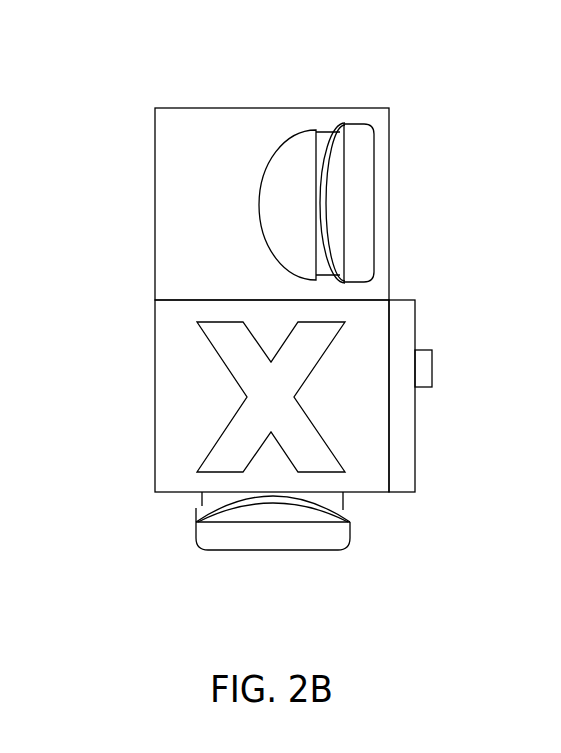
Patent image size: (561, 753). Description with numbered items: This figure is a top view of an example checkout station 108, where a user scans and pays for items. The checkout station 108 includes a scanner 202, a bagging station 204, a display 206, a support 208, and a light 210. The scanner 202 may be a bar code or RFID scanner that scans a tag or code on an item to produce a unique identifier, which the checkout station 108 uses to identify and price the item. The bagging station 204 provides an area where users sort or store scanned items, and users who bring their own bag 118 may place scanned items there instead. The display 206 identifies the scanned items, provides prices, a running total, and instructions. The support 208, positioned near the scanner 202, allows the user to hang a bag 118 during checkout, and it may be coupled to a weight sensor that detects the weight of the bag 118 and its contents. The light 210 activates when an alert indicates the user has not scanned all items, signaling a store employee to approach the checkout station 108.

The checkout station 108 is at (233, 74).
The scanner 202 is at (155, 400).
The bagging station 204 is at (390, 211).
The display 206 is at (415, 445).
The light 210 is at (432, 365).
The support 208 is at (200, 498).
The bag 118 is at (217, 548).